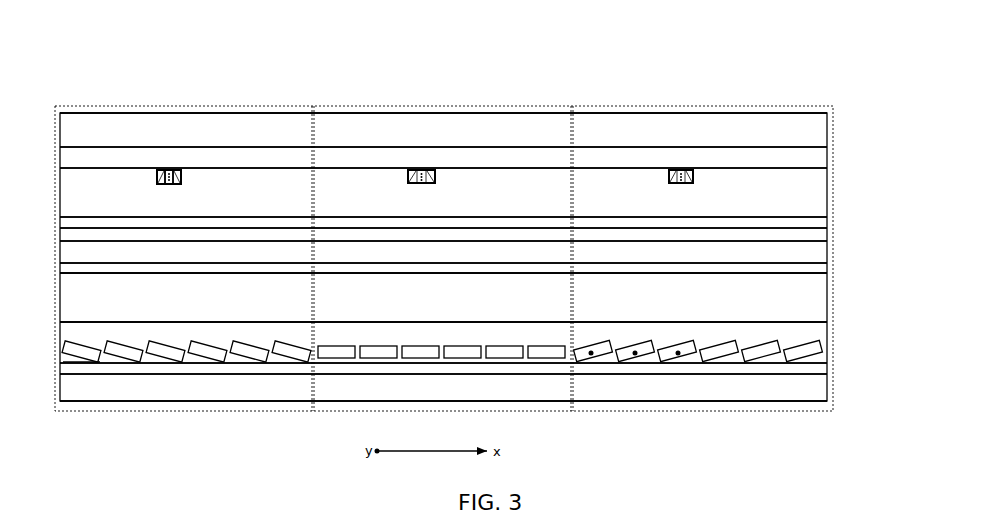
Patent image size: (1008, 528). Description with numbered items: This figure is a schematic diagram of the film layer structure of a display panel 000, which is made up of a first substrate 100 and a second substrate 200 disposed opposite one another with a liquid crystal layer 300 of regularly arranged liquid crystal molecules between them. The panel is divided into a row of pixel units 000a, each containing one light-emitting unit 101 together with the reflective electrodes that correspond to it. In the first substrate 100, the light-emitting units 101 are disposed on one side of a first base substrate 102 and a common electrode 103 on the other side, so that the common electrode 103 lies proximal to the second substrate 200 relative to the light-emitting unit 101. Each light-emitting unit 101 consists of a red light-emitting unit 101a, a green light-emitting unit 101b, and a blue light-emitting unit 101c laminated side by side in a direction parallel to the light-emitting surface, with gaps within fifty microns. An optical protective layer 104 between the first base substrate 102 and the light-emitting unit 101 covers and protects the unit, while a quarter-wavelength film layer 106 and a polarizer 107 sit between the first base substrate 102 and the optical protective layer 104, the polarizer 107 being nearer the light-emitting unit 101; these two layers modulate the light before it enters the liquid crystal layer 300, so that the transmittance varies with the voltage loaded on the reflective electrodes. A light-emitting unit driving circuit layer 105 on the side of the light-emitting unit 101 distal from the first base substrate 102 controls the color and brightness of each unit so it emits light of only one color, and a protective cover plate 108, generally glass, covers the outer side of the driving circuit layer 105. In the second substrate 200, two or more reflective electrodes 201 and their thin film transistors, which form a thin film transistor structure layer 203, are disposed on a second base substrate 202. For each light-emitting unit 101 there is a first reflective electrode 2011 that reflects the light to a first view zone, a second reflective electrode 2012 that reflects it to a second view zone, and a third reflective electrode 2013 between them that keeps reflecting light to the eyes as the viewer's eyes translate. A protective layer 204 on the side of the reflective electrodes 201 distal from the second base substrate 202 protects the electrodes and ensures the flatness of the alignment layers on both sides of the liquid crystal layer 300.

The display panel 000 is at (900, 88).
The pixel unit 000a is at (100, 106).
The first substrate 100 is at (886, 123).
The light-emitting unit 101 is at (694, 177).
The red light-emitting unit 101a is at (160, 184).
The green light-emitting unit 101b is at (209, 199).
The blue light-emitting unit 101c is at (183, 177).
The first base substrate 102 is at (802, 252).
The common electrode 103 is at (809, 268).
The optical protective layer 104 is at (810, 197).
The light-emitting unit driving circuit layer 105 is at (810, 157).
The film layer 106 is at (810, 234).
The polarizer 107 is at (810, 221).
The protective cover plate 108 is at (810, 130).
The second substrate 200 is at (886, 330).
The reflective electrode 201 is at (811, 352).
The first reflective electrode 2011 is at (591, 355).
The second reflective electrode 2012 is at (678, 355).
The third reflective electrode 2013 is at (635, 355).
The second base substrate 202 is at (812, 389).
The thin film transistor structure layer 203 is at (812, 370).
The protective layer 204 is at (806, 333).
The liquid crystal layer 300 is at (83, 298).